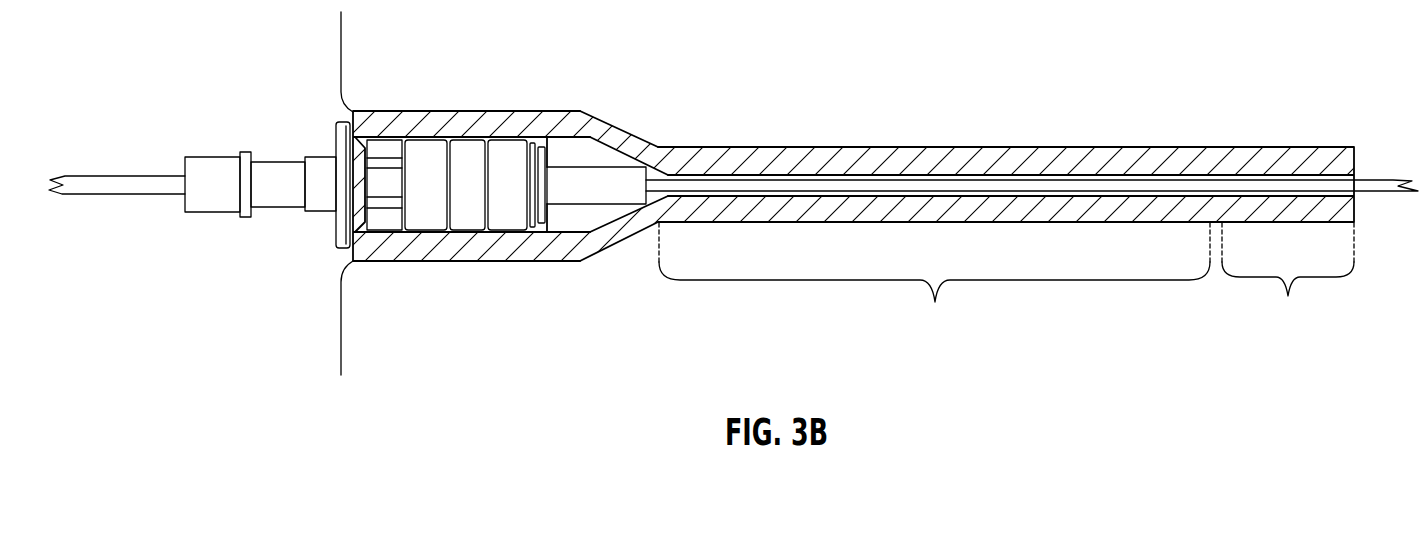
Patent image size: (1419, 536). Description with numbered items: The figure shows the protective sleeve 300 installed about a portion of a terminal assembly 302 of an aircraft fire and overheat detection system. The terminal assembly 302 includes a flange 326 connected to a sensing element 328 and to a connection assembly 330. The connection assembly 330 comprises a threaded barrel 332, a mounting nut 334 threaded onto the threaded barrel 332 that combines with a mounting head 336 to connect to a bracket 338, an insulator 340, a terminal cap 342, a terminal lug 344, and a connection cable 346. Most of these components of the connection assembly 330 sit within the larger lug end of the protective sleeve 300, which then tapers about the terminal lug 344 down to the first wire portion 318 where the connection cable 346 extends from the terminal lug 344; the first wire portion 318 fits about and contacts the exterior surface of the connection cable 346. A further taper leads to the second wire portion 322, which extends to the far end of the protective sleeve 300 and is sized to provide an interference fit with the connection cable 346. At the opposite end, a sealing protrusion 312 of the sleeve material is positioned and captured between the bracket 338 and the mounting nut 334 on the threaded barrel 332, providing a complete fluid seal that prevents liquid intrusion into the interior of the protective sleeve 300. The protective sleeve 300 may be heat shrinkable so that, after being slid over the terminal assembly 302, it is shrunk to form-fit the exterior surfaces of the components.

The protective sleeve 300 is at (1286, 55).
The terminal assembly 302 is at (559, 148).
The sealing protrusion 312 is at (357, 140).
The first wire portion 318 is at (1006, 246).
The second wire portion 322 is at (1288, 281).
The flange 326 is at (245, 152).
The sensing element 328 is at (123, 184).
The connection assembly 330 is at (485, 135).
The threaded barrel 332 is at (431, 152).
The mounting nut 334 is at (388, 228).
The mounting head 336 is at (344, 142).
The bracket 338 is at (341, 329).
The insulator 340 is at (485, 215).
The terminal cap 342 is at (541, 150).
The terminal lug 344 is at (592, 211).
The connection cable 346 is at (1038, 186).